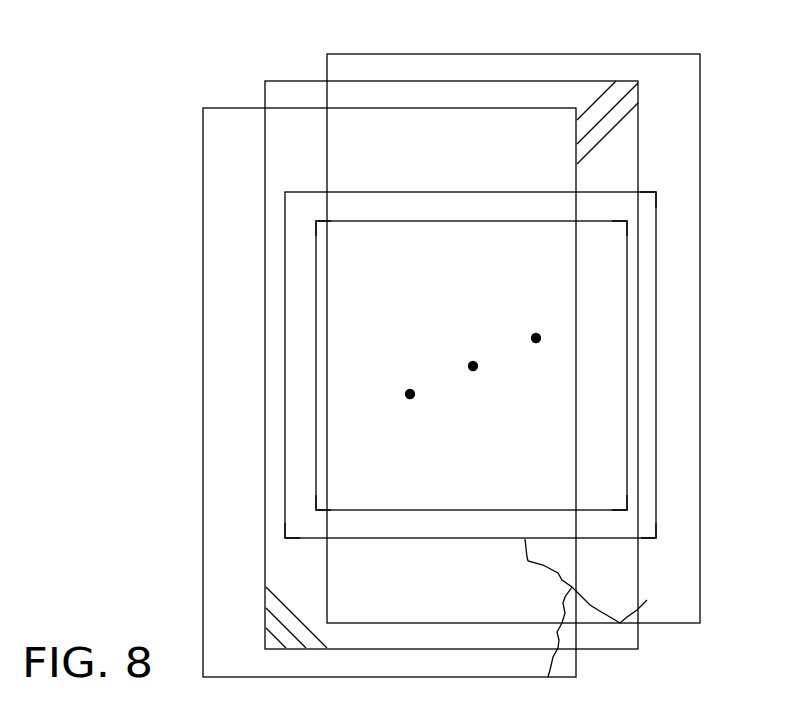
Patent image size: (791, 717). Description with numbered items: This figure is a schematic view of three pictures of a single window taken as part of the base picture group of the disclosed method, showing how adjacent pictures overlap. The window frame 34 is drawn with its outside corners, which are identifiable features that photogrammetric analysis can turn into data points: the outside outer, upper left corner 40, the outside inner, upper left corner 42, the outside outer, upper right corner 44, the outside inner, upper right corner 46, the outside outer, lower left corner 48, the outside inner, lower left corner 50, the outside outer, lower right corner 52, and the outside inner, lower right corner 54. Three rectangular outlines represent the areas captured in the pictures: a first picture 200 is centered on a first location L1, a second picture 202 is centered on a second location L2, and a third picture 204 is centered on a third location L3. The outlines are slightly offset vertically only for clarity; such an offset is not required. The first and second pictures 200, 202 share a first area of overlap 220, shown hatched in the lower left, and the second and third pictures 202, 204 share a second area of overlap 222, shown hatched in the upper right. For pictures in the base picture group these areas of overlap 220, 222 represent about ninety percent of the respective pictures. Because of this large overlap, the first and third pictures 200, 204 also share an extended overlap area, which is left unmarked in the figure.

The first picture 200 is at (203, 128).
The second picture 202 is at (265, 99).
The third picture 204 is at (327, 65).
The outside outer, upper left corner 40 is at (285, 193).
The frame 34 is at (300, 402).
The outside inner, upper left corner 42 is at (316, 222).
The outside outer, upper right corner 44 is at (656, 192).
The outside inner, upper right corner 46 is at (627, 222).
The outside outer, lower left corner 48 is at (285, 538).
The outside inner, lower left corner 50 is at (317, 509).
The outside outer, lower right corner 52 is at (656, 539).
The outside inner, lower right corner 54 is at (627, 510).
The first area of overlap 220 is at (280, 640).
The second area of overlap 222 is at (628, 102).
The first location L1 is at (410, 398).
The second location L2 is at (473, 370).
The third location L3 is at (536, 342).